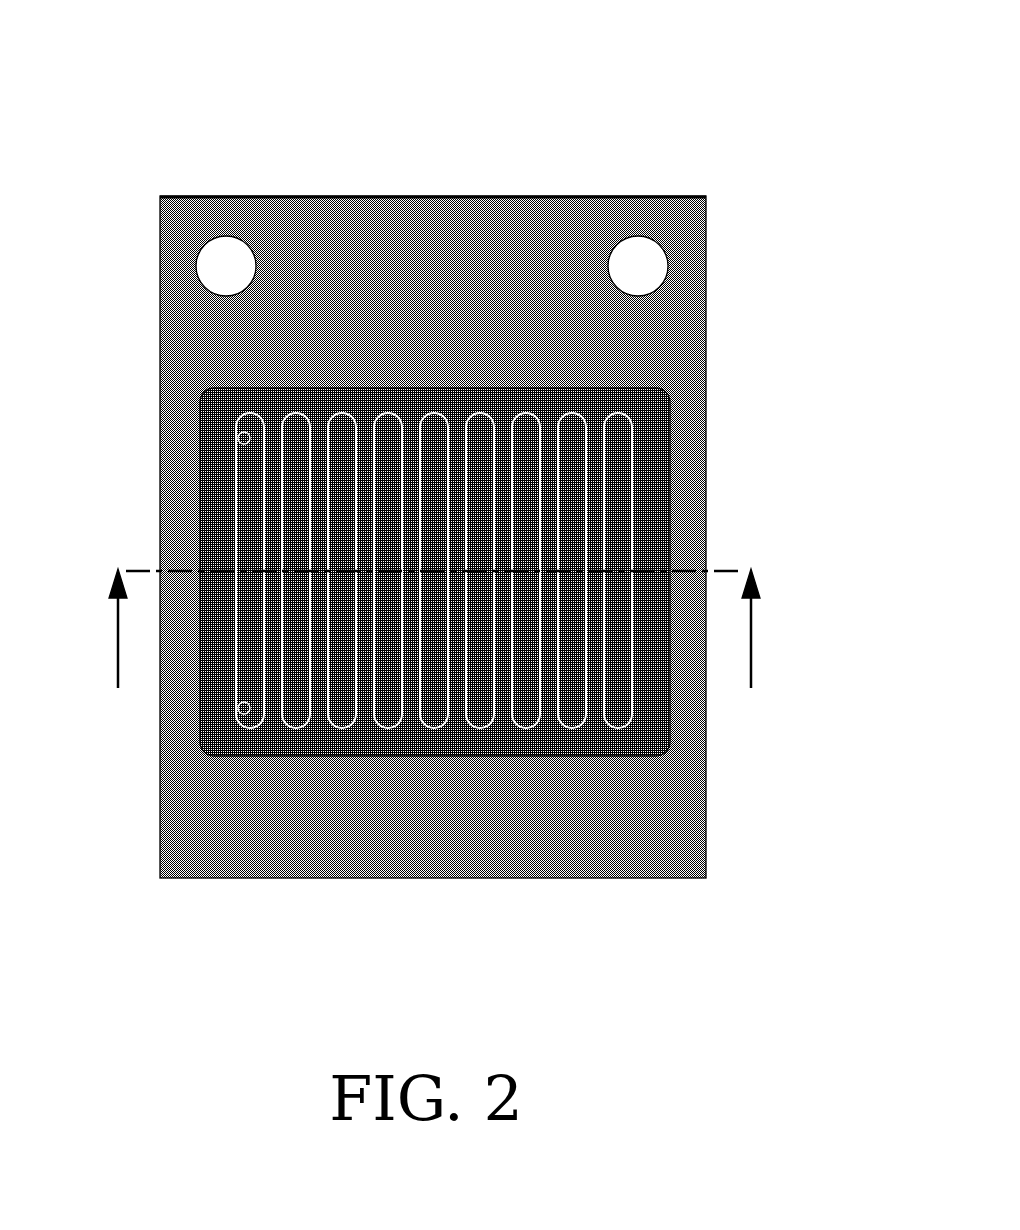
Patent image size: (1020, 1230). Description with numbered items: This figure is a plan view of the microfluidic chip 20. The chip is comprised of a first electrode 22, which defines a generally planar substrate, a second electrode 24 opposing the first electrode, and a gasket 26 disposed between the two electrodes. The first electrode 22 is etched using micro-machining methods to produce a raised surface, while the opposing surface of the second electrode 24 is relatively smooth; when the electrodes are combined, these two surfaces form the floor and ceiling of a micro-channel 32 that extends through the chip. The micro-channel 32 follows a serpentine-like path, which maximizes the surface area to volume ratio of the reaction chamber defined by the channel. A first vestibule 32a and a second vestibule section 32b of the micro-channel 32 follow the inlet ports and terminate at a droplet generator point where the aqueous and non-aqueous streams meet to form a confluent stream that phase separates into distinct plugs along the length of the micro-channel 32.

The microfluidic chip 20 is at (444, 514).
The first electrode 22 is at (200, 793).
The second electrode 24 is at (196, 340).
The gasket 26 is at (630, 692).
The micro-channel 32 is at (480, 705).
The first vestibule 32a is at (248, 489).
The second vestibule section 32b is at (222, 638).